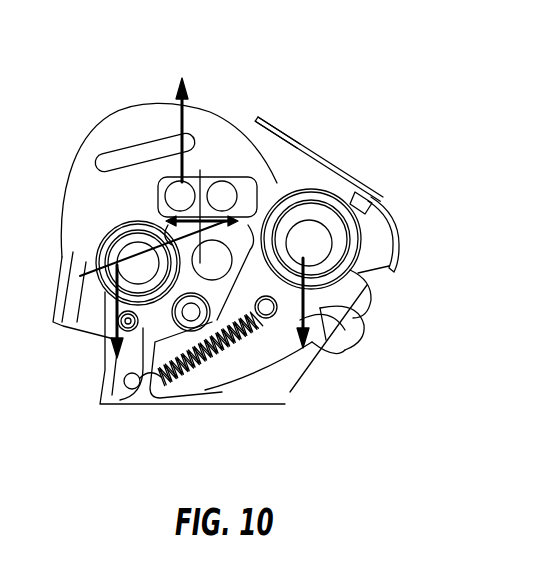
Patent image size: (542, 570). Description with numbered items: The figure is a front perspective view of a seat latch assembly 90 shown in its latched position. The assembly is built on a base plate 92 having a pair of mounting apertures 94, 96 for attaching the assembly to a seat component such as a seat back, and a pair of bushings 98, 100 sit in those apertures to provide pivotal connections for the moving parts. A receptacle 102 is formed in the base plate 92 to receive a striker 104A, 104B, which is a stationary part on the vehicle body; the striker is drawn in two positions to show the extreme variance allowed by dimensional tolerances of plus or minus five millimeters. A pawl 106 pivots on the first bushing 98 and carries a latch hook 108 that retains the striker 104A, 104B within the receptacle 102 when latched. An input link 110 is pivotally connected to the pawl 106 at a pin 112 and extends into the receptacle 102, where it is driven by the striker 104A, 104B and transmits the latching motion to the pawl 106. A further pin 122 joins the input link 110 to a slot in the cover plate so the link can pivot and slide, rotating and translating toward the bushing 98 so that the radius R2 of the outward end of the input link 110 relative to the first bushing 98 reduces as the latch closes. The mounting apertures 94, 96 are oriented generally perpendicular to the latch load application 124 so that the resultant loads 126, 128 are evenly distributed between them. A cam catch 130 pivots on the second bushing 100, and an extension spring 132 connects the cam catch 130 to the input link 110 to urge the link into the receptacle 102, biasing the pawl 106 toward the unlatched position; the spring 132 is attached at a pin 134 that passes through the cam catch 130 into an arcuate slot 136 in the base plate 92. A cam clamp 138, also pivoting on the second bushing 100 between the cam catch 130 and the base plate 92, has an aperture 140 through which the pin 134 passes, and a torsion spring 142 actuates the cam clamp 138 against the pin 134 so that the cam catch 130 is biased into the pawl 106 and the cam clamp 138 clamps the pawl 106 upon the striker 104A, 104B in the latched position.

The seat latch assembly 90 is at (330, 99).
The base plate 92 is at (292, 138).
The mounting aperture 94 is at (135, 247).
The mounting aperture 96 is at (314, 232).
The bushing 98 is at (110, 312).
The bushing 100 is at (336, 230).
The receptacle 102 is at (253, 178).
The striker 104A is at (182, 180).
The striker 104B is at (230, 180).
The pawl 106 is at (80, 170).
The latch hook 108 is at (261, 117).
The input link 110 is at (213, 305).
The pin 112 is at (145, 385).
The pin 122 is at (191, 313).
The latch load application 124 is at (172, 96).
The resultant load 126 is at (101, 366).
The resultant load 128 is at (320, 308).
The cam catch 130 is at (272, 325).
The extension spring 132 is at (225, 385).
The pin 134 is at (266, 318).
The arcuate slot 136 is at (352, 318).
The cam clamp 138 is at (326, 310).
The aperture 140 is at (328, 355).
The torsion spring 142 is at (369, 292).
The radius R2 is at (206, 250).